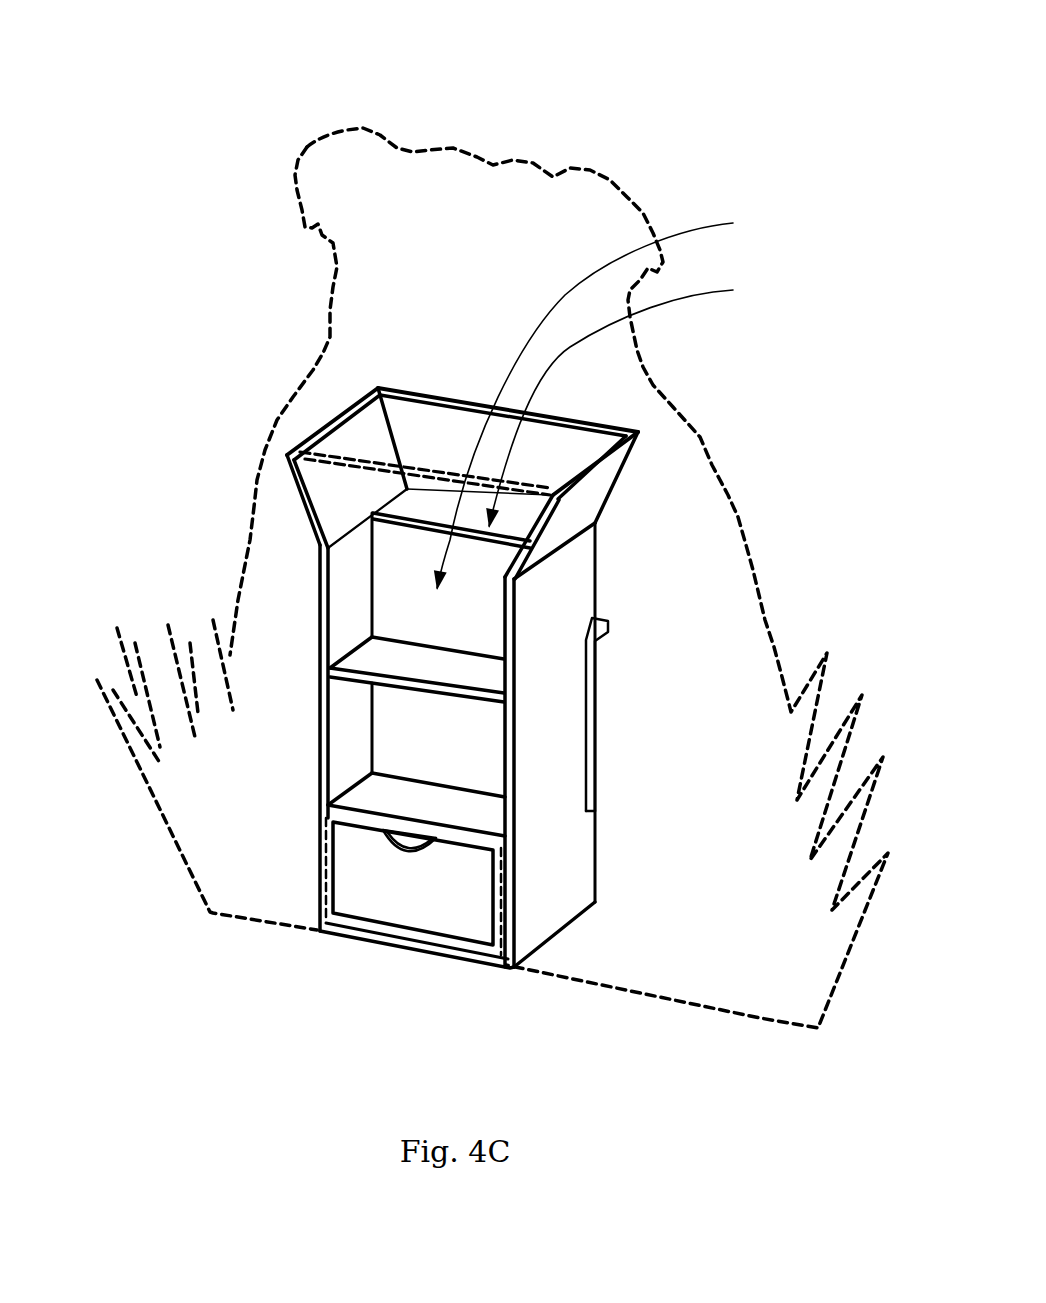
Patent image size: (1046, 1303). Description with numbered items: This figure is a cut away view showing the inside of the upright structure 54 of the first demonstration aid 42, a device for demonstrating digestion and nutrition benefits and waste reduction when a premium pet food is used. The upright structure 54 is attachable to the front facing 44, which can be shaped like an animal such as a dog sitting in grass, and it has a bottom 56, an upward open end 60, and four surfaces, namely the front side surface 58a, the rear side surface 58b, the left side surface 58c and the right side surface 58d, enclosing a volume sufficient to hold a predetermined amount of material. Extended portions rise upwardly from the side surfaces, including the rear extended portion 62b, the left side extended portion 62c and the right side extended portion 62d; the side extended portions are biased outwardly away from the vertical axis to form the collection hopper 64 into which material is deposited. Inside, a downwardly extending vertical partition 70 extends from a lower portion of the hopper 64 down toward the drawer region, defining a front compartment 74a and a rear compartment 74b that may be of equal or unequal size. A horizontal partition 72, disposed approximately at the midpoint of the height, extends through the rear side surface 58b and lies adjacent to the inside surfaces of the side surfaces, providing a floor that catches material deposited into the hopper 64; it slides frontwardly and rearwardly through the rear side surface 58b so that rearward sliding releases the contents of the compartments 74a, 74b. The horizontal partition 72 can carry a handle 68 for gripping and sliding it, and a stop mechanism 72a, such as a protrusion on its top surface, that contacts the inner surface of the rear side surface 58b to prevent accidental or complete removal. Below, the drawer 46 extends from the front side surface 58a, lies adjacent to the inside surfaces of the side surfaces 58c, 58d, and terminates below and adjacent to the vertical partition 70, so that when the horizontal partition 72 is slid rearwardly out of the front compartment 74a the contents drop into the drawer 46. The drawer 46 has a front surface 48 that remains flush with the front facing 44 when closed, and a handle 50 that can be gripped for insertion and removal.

The first demonstration aid 42 is at (665, 125).
The front facing 44 is at (307, 147).
The drawer 46 is at (380, 938).
The front surface 48 is at (397, 895).
The handle 50 is at (410, 851).
The upright structure 54 is at (457, 477).
The bottom 56 is at (553, 940).
The front side surface 58a is at (317, 885).
The rear side surface 58b is at (595, 573).
The left side surface 58c is at (318, 612).
The right side surface 58d is at (578, 595).
The upward open end 60 is at (405, 513).
The rear extended portion 62b is at (620, 424).
The left side extended portion 62c is at (308, 430).
The right side extended portion 62d is at (597, 492).
The collection hopper 64 is at (424, 437).
The handle 68 is at (608, 630).
The vertical partition 70 is at (370, 613).
The horizontal partition 72 is at (425, 670).
The stop mechanism 72a is at (370, 613).
The front compartment 74a is at (608, 399).
The rear compartment 74b is at (634, 402).